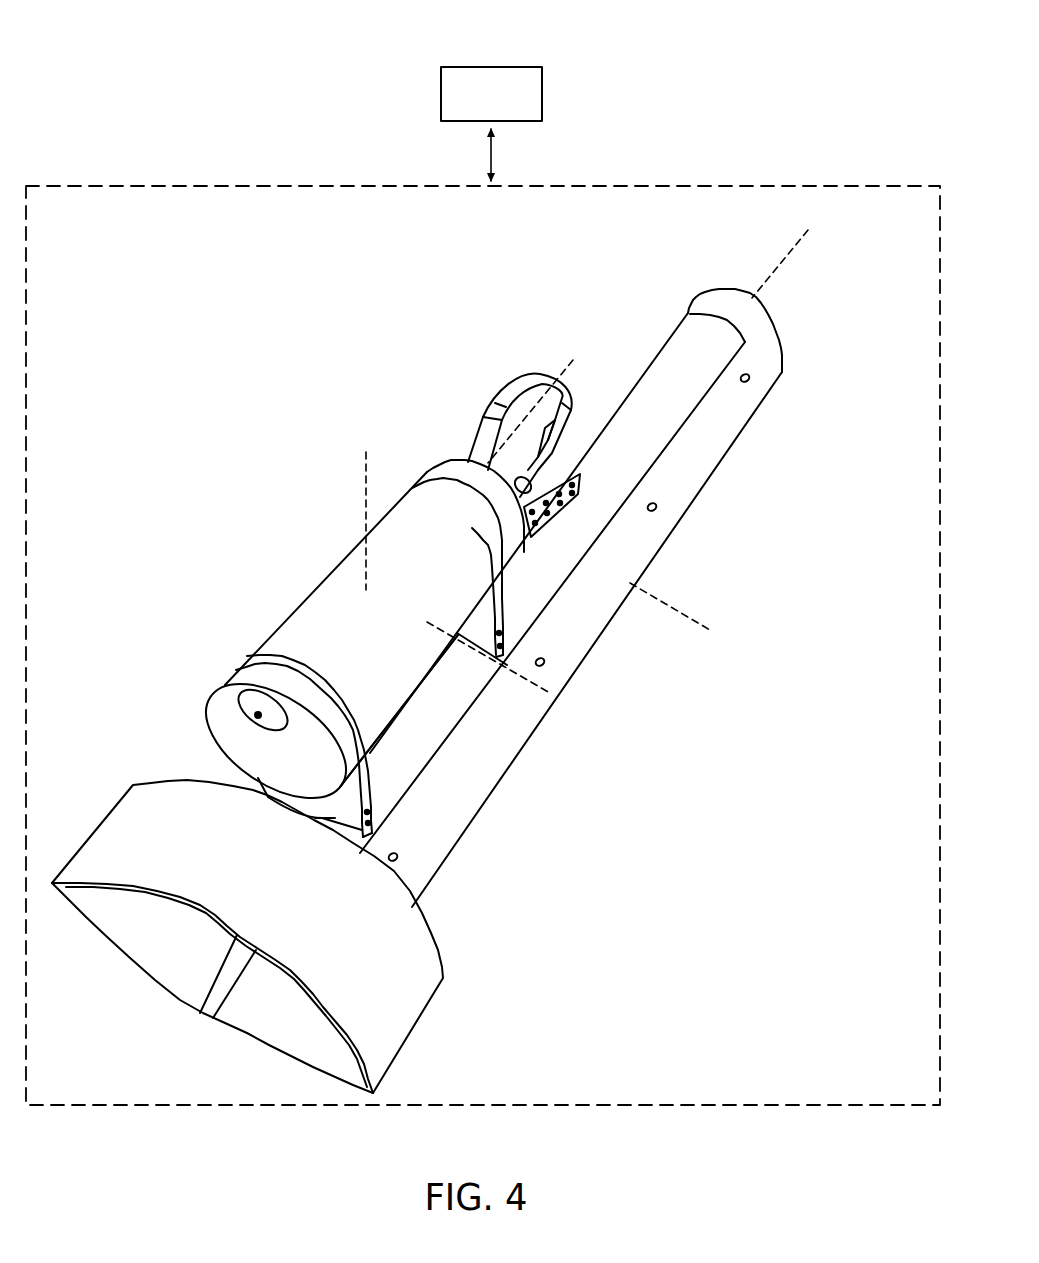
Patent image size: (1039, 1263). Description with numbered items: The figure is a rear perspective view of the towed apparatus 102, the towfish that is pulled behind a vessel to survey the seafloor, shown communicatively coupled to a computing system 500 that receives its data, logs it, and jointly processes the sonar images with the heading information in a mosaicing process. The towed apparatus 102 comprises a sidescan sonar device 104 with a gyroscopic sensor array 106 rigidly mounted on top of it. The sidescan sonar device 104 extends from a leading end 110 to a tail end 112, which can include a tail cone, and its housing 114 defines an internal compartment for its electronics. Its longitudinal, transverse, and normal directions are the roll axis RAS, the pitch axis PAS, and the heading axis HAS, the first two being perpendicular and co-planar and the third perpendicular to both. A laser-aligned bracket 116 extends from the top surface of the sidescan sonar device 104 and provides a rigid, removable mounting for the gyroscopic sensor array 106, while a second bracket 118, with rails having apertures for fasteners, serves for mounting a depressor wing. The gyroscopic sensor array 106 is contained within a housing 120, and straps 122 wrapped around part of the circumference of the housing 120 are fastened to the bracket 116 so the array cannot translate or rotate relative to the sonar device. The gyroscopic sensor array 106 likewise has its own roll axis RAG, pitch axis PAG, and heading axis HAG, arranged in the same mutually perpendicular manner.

The towed apparatus 102 is at (185, 80).
The computing system 500 is at (476, 111).
The sidescan sonar device 104 is at (690, 543).
The gyroscopic sensor array 106 is at (405, 582).
The leading end 110 is at (780, 325).
The tail end 112 is at (128, 977).
The housing 114 is at (668, 462).
The bracket 116 is at (387, 758).
The second bracket 118 is at (578, 505).
The housing 120 is at (280, 626).
The straps 122 is at (437, 488).
The roll axis of the sidescan sonar device RAS is at (770, 270).
The roll axis of the gyroscopic sensor array RAG is at (573, 360).
The heading axis of the sidescan sonar device HAS is at (549, 426).
The heading axis of the gyroscopic sensor array HAG is at (365, 487).
The pitch axis of the sidescan sonar device PAS is at (681, 610).
The pitch axis of the gyroscopic sensor array PAG is at (455, 640).